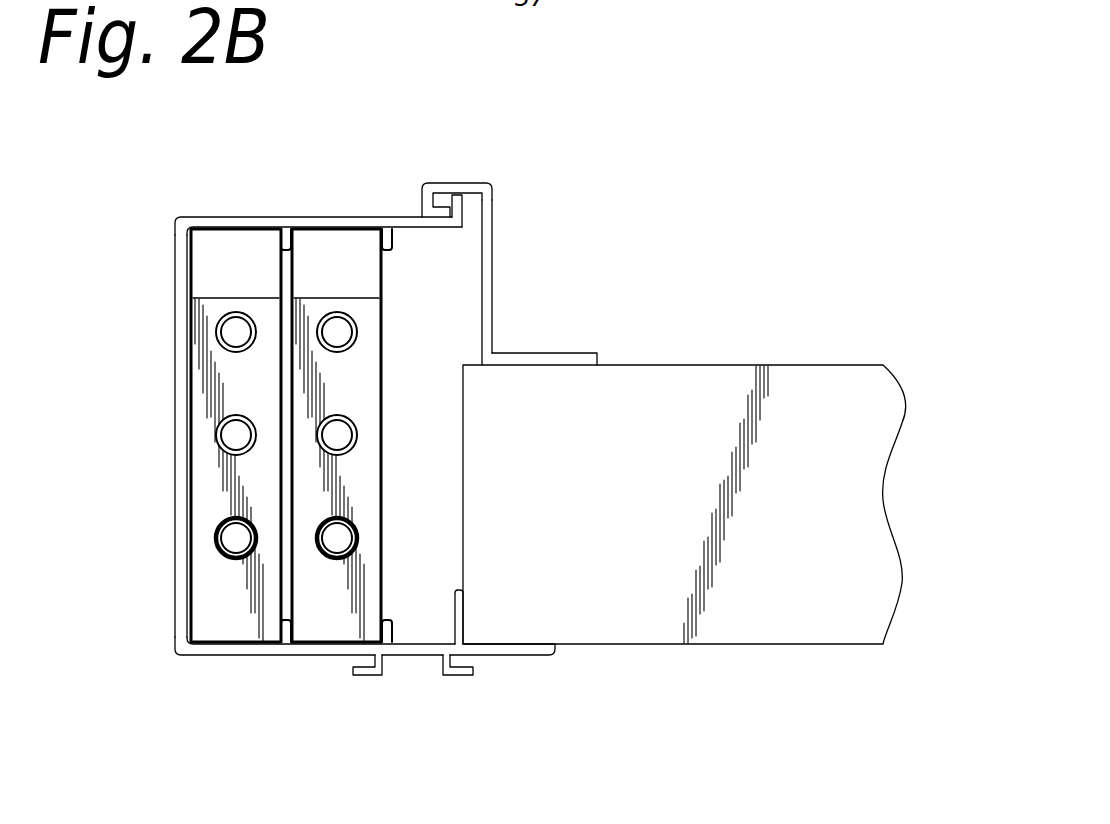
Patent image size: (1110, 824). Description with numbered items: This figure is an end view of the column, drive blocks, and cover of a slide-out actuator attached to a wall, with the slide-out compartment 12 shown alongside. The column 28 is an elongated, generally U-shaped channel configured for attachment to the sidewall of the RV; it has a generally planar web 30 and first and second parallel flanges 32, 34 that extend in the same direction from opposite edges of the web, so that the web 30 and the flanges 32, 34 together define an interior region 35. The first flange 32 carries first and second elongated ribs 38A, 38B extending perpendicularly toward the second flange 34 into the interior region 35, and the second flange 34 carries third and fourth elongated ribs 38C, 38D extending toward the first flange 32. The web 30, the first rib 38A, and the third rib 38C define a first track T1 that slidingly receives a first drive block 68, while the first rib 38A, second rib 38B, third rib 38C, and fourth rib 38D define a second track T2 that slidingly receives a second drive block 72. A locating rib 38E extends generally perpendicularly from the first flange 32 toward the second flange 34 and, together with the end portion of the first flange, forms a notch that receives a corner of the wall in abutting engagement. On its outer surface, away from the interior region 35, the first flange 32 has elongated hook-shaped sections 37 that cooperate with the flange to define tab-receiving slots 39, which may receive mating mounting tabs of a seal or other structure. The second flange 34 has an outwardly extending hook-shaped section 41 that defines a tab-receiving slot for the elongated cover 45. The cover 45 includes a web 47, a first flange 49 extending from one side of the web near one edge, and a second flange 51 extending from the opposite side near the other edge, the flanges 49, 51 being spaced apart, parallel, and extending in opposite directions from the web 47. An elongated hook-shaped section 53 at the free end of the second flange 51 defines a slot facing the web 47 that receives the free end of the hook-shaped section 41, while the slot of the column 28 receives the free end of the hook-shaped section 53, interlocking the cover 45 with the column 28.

The slide-out compartment 12 is at (662, 370).
The column 28 is at (114, 357).
The web 30 is at (175, 300).
The first flange 32 is at (215, 655).
The second flange 34 is at (258, 217).
The interior region 35 is at (440, 431).
The hook-shaped sections 37 is at (362, 675).
The first rib 38A is at (287, 618).
The second rib 38B is at (385, 618).
The third rib 38C is at (292, 240).
The fourth rib 38D is at (388, 250).
The locating rib 38E is at (455, 590).
The tab-receiving slots 39 is at (352, 659).
The hook-shaped section 41 is at (468, 215).
The cover 45 is at (503, 165).
The web 47 is at (495, 240).
The first flange 49 is at (530, 353).
The second flange 51 is at (465, 200).
The hook-shaped section 53 is at (420, 203).
The first drive block 68 is at (205, 400).
The second drive block 72 is at (363, 377).
The first track T1 is at (208, 203).
The second track T2 is at (343, 200).